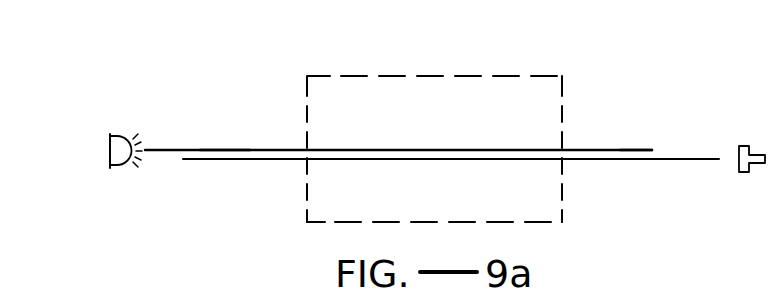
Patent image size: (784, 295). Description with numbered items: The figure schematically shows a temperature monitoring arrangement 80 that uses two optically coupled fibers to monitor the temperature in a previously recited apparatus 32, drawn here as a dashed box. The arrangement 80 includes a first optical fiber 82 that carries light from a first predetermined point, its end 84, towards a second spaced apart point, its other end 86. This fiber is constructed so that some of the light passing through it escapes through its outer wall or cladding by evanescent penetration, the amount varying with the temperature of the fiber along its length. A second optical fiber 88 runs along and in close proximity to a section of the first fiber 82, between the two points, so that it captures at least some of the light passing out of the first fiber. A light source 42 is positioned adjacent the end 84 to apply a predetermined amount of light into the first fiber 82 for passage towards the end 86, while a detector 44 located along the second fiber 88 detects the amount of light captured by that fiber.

The temperature monitoring arrangement 80 is at (246, 66).
The light source 42 is at (113, 168).
The end of first optical fiber 84 is at (146, 149).
The first optical fiber 82 is at (212, 149).
The second optical fiber 88 is at (240, 160).
The apparatus 32 is at (563, 107).
The other end of first optical fiber 86 is at (652, 150).
The detector 44 is at (745, 173).